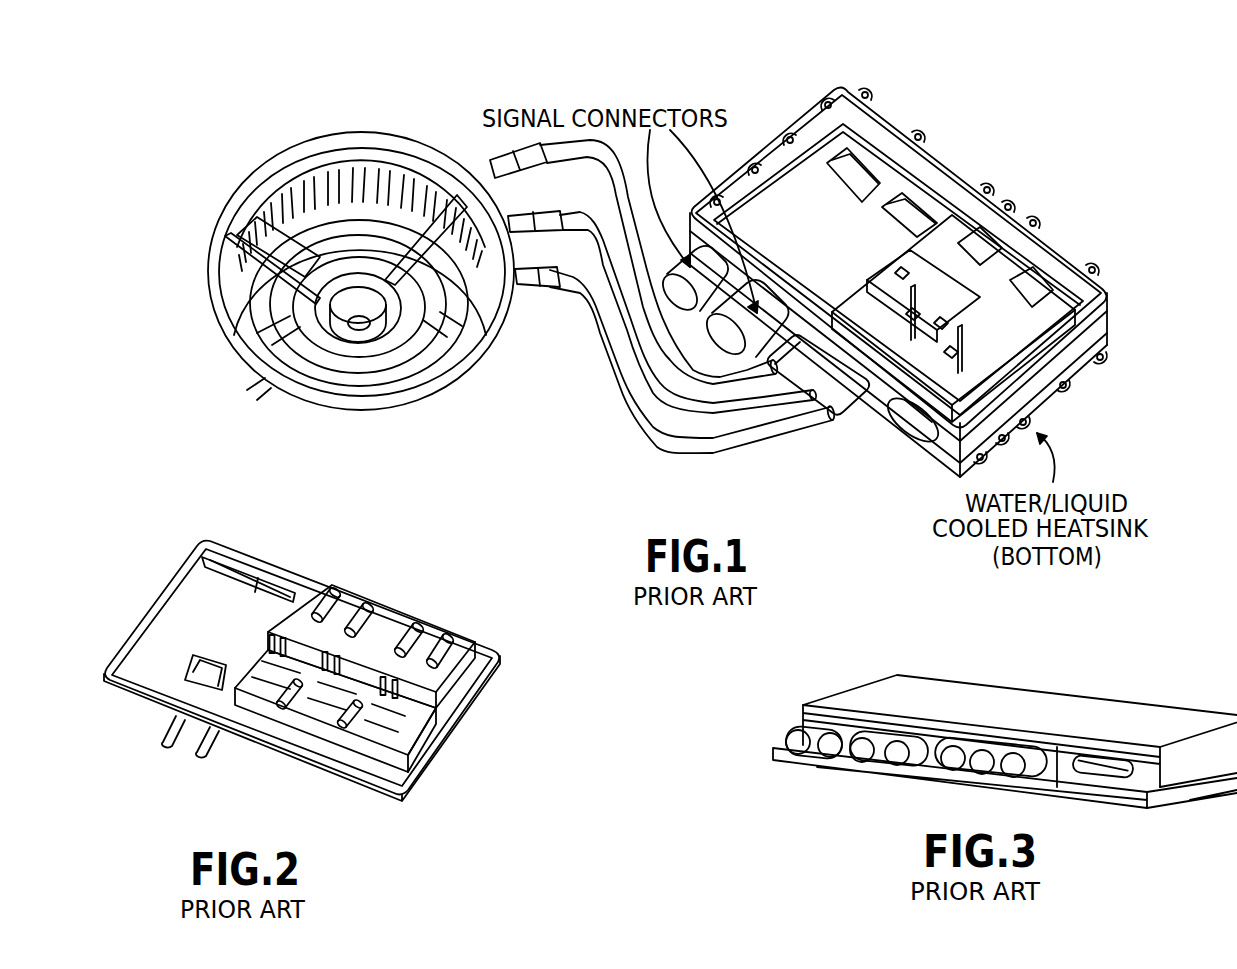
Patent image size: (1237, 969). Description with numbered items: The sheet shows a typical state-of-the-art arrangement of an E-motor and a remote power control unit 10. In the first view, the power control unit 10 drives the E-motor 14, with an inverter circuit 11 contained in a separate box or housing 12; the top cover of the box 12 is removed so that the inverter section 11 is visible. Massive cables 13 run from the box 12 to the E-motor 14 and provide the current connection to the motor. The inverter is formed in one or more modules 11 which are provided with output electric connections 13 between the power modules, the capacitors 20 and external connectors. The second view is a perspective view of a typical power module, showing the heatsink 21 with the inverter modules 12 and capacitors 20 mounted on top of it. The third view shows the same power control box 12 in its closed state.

In FIG. 1, the power control unit 10 is at (934, 261).
In FIG. 3, the power control unit 10 is at (1103, 683).
In FIG. 1, the inverter circuit 11 is at (1083, 226).
In FIG. 2, the inverter circuit 11 is at (428, 715).
In FIG. 1, the box or housing 12 is at (873, 145).
In FIG. 2, the box or housing 12 is at (283, 728).
In FIG. 1, the cables 13 is at (603, 382).
In FIG. 1, the E-motor 14 is at (326, 148).
In FIG. 2, the capacitors 20 is at (415, 620).
In FIG. 2, the heatsink 21 is at (203, 593).